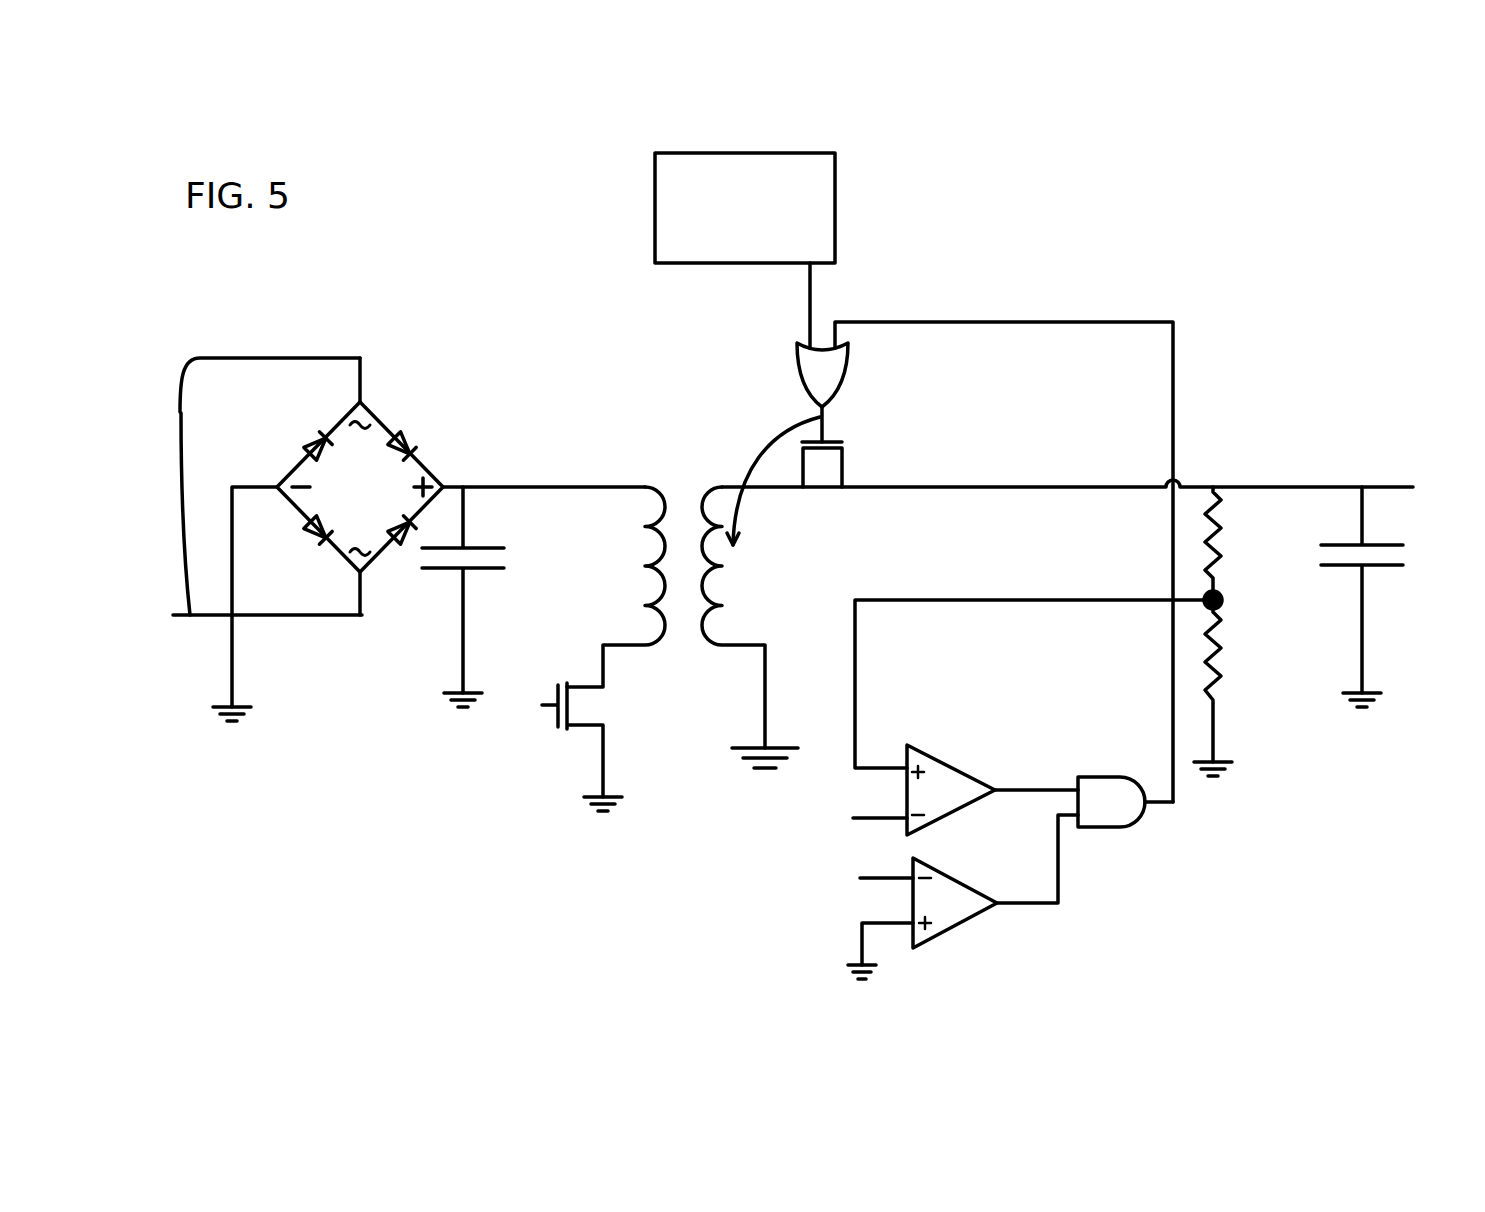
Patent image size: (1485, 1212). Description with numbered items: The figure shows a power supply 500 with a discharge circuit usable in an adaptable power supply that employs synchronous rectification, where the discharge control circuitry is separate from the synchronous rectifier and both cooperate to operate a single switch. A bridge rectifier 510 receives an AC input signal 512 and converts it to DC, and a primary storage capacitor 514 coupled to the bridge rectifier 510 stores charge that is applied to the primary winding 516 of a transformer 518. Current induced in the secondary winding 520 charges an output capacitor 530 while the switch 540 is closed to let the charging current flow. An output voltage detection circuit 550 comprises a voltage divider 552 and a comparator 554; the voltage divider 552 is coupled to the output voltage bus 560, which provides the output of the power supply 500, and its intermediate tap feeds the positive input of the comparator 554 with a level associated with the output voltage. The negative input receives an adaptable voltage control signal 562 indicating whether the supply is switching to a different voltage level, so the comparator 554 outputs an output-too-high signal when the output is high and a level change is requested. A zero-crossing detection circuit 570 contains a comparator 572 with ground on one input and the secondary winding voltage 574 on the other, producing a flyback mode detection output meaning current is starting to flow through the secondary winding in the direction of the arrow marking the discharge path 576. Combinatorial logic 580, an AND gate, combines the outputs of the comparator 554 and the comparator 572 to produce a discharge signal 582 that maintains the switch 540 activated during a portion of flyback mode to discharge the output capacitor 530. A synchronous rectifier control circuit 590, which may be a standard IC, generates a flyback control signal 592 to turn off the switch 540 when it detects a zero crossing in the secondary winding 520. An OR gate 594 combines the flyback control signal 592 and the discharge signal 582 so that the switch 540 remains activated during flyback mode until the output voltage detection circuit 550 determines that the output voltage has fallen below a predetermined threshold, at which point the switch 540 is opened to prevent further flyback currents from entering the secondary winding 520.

The power supply 500 is at (1183, 252).
The bridge rectifier 510 is at (378, 413).
The AC input signal 512 is at (252, 486).
The primary storage capacitor 514 is at (440, 572).
The primary winding 516 is at (623, 485).
The transformer 518 is at (690, 630).
The secondary winding 520 is at (713, 486).
The output capacitor 530 is at (1333, 545).
The switch 540 is at (843, 462).
The output voltage detection circuit 550 is at (1213, 638).
The voltage divider 552 is at (1262, 613).
The comparator 554 is at (978, 803).
The output voltage bus 560 is at (1075, 461).
The adaptable voltage control signal 562 is at (782, 820).
The zero-crossing detection circuit 570 is at (933, 943).
The comparator 572 is at (992, 895).
The secondary winding voltage 574 is at (770, 883).
The discharge path 576 is at (796, 514).
The combinatorial logic 580 is at (1123, 828).
The discharge signal 582 is at (1004, 497).
The synchronous rectifier control circuit 590 is at (655, 207).
The flyback control signal 592 is at (739, 311).
The OR gate 594 is at (848, 367).